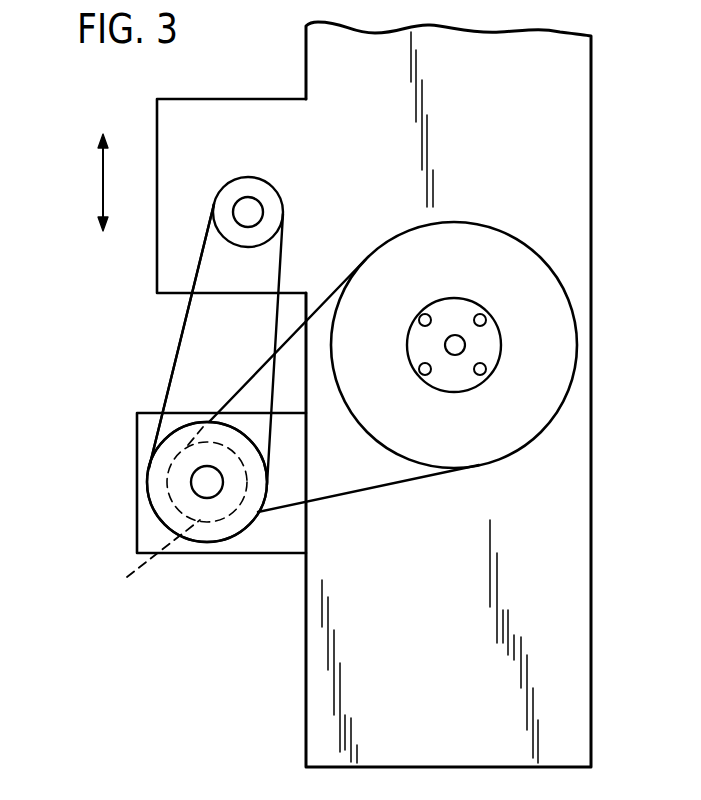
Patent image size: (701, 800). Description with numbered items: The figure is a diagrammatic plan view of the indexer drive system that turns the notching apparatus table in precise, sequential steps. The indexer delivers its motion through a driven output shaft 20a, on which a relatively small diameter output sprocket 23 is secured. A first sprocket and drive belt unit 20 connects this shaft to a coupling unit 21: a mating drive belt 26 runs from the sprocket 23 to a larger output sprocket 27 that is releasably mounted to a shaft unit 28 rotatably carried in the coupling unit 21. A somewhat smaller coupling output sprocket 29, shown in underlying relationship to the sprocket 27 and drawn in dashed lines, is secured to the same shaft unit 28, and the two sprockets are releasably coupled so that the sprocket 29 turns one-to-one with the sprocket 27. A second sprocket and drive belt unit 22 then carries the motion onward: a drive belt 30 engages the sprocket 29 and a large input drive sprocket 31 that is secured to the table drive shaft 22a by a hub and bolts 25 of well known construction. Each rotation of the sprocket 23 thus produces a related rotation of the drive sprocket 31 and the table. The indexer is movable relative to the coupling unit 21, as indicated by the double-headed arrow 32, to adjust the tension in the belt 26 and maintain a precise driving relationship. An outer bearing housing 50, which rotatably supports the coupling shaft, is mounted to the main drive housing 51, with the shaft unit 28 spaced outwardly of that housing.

The first sprocket and drive belt unit 20 is at (168, 378).
The output shaft 20a is at (236, 211).
The coupling unit 21 is at (162, 527).
The second sprocket and drive belt unit 22 is at (333, 504).
The drive shaft 22a is at (456, 344).
The output sprocket 23 is at (247, 177).
The hub and bolts 25 is at (424, 326).
The drive belt 26 is at (186, 322).
The output sprocket 27 is at (158, 472).
The shaft unit 28 is at (212, 487).
The coupling output sprocket 29 is at (156, 517).
The drive belt 30 is at (400, 482).
The input drive sprocket 31 is at (533, 420).
The indexer movement 32 is at (100, 182).
The outer bearing housing 50 is at (270, 542).
The main drive housing 51 is at (572, 717).